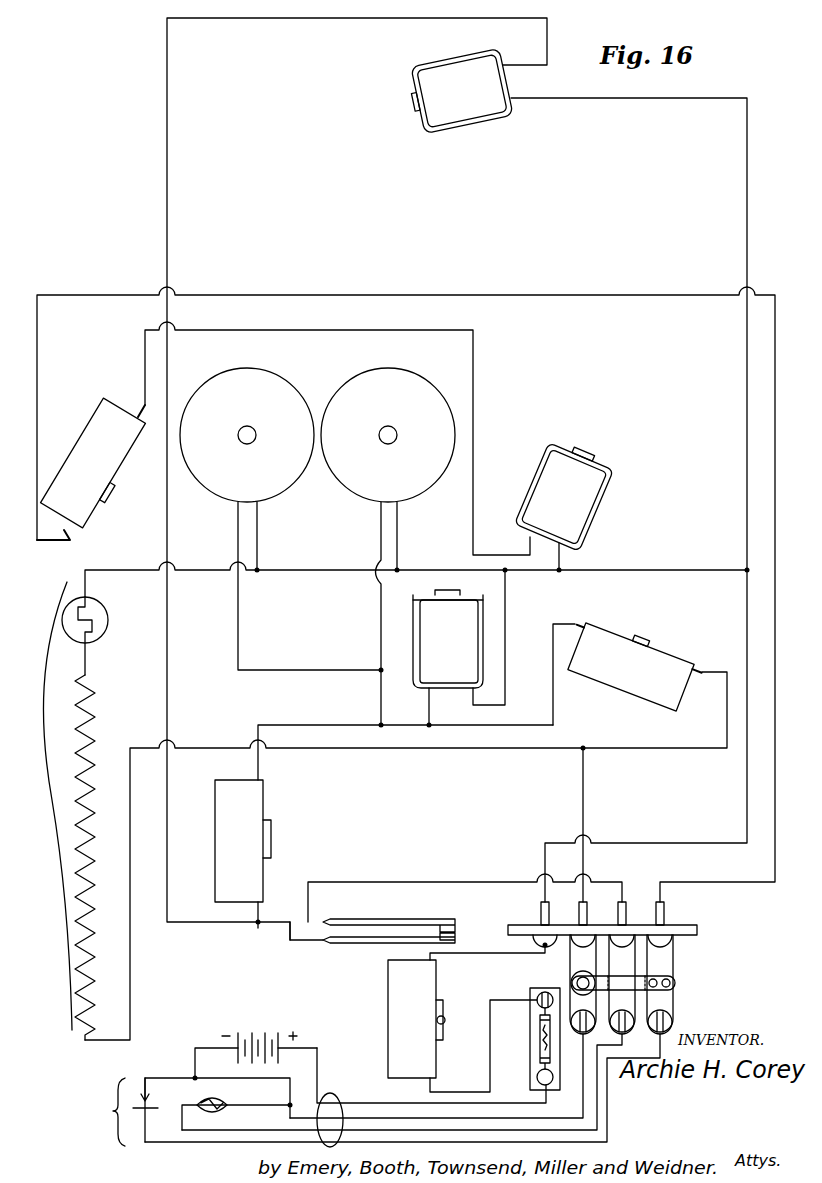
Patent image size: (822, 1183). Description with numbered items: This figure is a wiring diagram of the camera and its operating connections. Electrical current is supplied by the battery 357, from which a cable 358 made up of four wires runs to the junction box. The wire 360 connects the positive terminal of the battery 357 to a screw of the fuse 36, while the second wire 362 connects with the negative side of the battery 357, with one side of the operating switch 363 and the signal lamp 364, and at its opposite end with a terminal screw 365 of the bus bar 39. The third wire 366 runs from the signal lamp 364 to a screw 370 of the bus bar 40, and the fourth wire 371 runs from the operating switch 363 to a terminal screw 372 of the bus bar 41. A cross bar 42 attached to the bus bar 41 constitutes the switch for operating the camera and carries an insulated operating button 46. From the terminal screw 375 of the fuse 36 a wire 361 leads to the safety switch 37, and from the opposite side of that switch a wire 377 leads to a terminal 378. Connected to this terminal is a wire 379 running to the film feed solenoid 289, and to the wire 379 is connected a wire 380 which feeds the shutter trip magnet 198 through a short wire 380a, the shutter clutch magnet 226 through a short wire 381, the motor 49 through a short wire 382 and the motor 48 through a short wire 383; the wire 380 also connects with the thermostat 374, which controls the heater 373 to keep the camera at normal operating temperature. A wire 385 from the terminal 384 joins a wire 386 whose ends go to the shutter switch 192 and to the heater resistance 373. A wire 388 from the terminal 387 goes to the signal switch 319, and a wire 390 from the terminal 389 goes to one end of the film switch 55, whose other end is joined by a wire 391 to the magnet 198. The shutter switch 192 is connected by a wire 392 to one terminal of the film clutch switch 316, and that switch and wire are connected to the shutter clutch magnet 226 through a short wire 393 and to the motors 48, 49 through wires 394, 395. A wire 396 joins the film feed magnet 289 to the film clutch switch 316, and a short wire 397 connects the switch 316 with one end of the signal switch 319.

The wire 396 is at (319, 20).
The short wire 397 is at (292, 942).
The wire 379 is at (638, 101).
The wire 390 is at (612, 298).
The wire 391 is at (326, 333).
The wire 380 is at (667, 572).
The short wire 380a is at (572, 553).
The short wire 383 is at (258, 542).
The short wire 382 is at (398, 542).
The wire 395 is at (314, 675).
The wire 394 is at (380, 725).
The short wire 393 is at (431, 726).
The wire 392 is at (462, 727).
The short wire 381 is at (506, 612).
The wire 386 is at (545, 752).
The wire 385 is at (585, 810).
The wire 388 is at (430, 884).
The wire 377 is at (474, 955).
The wire 361 is at (488, 1058).
The wire 360 is at (389, 1103).
The second wire 362 is at (418, 1118).
The screw 370 is at (643, 1033).
The fourth wire 371 is at (194, 1144).
The film feed solenoid 289 is at (470, 121).
The film switch 55 is at (86, 438).
The motor 48 is at (244, 376).
The motor 49 is at (389, 376).
The shutter trip magnet 198 is at (586, 512).
The shutter clutch magnet 226 is at (430, 672).
The shutter switch 192 is at (628, 696).
The thermostat control 374 is at (95, 626).
The heater 373 is at (64, 811).
The film clutch switch 316 is at (265, 826).
The signal switch 319 is at (360, 920).
The safety switch 37 is at (388, 1028).
The fuse 36 is at (529, 1040).
The terminal screw 375 is at (538, 1001).
The third wire 366 is at (550, 1084).
The terminal screw 365 is at (575, 1063).
The battery 357 is at (264, 1027).
The operating switch 363 is at (185, 1112).
The signal lamp 364 is at (222, 1102).
The cable 358 is at (334, 1112).
The terminal 378 is at (540, 913).
The terminal 384 is at (587, 905).
The terminal 387 is at (626, 910).
The terminal 389 is at (665, 912).
The bus bar 39 is at (569, 968).
The insulated operating button 46 is at (596, 984).
The bus bar 41 is at (672, 968).
The cross bar 42 is at (676, 998).
The bus bar 40 is at (607, 1026).
The terminal screw 372 is at (676, 1022).